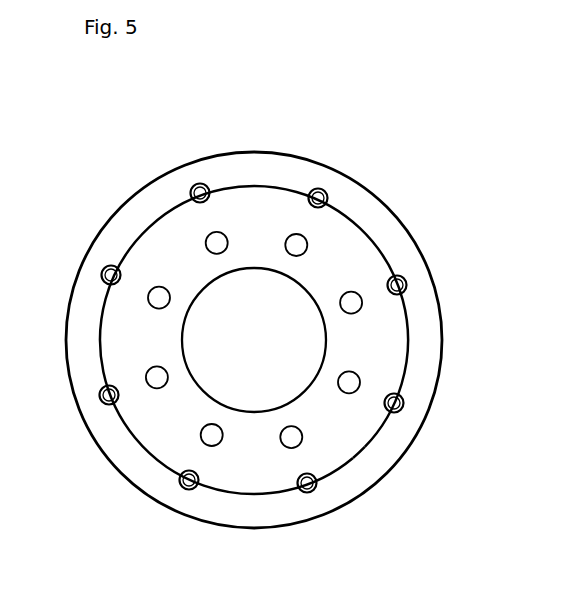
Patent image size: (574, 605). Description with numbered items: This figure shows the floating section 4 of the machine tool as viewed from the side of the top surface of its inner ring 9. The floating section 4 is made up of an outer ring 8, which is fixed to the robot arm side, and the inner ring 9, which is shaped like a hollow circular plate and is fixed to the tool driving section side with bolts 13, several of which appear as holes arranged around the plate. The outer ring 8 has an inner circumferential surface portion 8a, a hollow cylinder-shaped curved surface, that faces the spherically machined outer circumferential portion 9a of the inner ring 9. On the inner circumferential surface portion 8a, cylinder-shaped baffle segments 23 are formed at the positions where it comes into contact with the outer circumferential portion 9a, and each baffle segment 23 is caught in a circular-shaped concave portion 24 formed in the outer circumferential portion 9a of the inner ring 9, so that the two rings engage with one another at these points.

The floating section 4 is at (266, 78).
The outer ring 8 is at (427, 322).
The inner circumferential surface portion 8a is at (408, 365).
The inner ring 9 is at (335, 243).
The outer circumferential portion 9a is at (357, 454).
The bolt 13 is at (213, 243).
The baffle segment 23 is at (400, 405).
The concave portion 24 is at (380, 406).